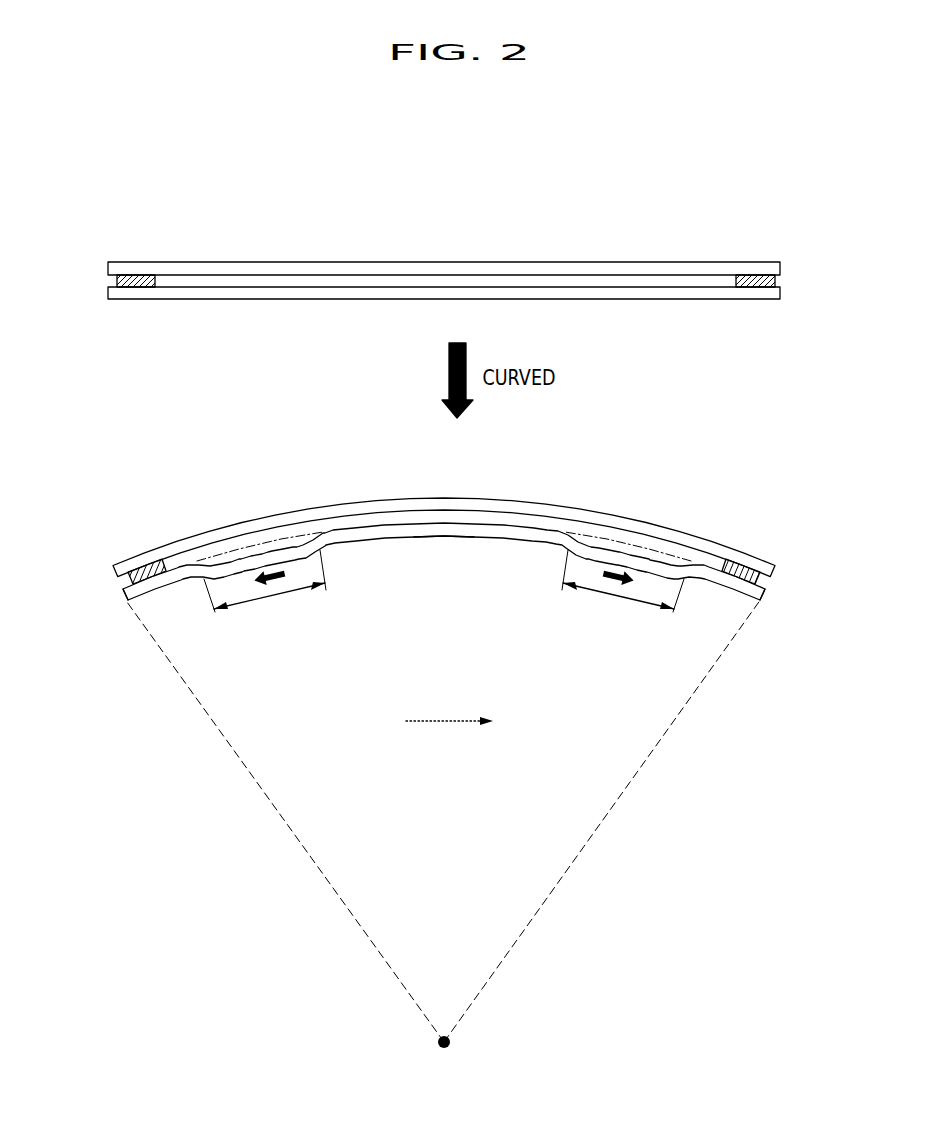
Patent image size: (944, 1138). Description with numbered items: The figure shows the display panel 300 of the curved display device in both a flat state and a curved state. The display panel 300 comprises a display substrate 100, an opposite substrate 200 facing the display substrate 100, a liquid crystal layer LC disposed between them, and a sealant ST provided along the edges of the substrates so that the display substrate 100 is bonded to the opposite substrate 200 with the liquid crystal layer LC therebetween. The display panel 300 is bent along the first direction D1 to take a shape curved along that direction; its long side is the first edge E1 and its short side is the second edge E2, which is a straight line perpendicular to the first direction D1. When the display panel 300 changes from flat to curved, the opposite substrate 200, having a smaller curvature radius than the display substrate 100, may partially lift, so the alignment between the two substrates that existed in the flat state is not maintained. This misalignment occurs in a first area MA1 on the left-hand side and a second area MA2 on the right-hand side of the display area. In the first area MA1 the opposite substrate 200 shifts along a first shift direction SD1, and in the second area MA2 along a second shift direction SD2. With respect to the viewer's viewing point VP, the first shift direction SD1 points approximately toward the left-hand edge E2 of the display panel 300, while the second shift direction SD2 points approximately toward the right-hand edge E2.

The display substrate 100 is at (778, 268).
The opposite substrate 200 is at (780, 294).
The liquid crystal layer LC is at (467, 278).
The sealant ST is at (117, 281).
The display panel 300 is at (768, 234).
The first shift direction SD1 is at (268, 570).
The second shift direction SD2 is at (620, 570).
The first area MA1 is at (265, 586).
The second area MA2 is at (623, 586).
The first edge E1 is at (443, 541).
The second edge E2 is at (127, 602).
The first direction D1 is at (449, 735).
The viewing point VP is at (444, 839).